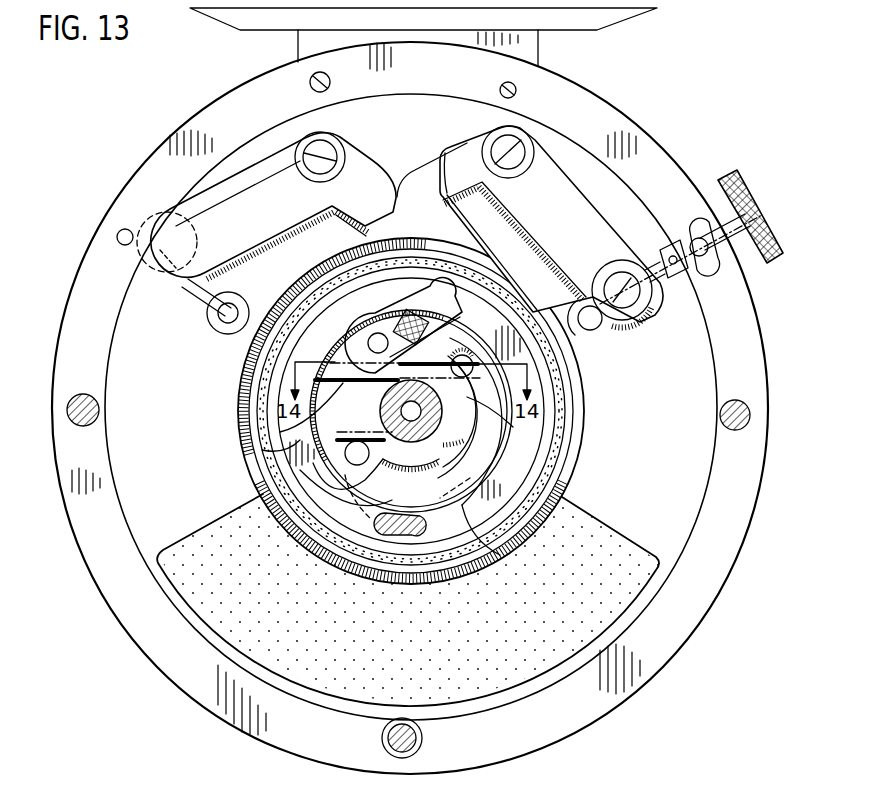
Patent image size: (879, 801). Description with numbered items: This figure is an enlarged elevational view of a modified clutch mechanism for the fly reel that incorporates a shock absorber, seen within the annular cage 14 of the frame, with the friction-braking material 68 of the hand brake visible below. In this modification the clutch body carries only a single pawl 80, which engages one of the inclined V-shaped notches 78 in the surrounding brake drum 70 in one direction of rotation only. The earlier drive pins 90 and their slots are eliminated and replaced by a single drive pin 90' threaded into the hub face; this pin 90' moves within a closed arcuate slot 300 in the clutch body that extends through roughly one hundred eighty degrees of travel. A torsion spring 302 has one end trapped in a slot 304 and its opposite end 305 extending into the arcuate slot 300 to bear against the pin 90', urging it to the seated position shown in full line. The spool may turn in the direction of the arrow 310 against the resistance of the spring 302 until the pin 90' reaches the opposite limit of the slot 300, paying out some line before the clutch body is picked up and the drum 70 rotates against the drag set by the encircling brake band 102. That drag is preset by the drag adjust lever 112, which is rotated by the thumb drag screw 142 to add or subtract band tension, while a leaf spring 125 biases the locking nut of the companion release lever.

The annular cage 14 is at (738, 306).
The friction-braking material 68 is at (302, 640).
The leaf spring 125 is at (252, 204).
The drag adjust lever 112 is at (578, 212).
The thumb drag screw 142 is at (752, 198).
The brake band 102 is at (245, 380).
The arrow 310 is at (367, 572).
The arcuate slot 300 is at (487, 455).
The slot 304 is at (490, 470).
The pawl-receiving V-shaped notches 78 is at (405, 295).
The pawl 80 is at (430, 308).
The drive pin 90' is at (544, 354).
The opposite end of torsion spring 305 is at (345, 430).
The drive pins 90 is at (317, 498).
The brake drum 70 is at (373, 467).
The torsion spring 302 is at (463, 566).